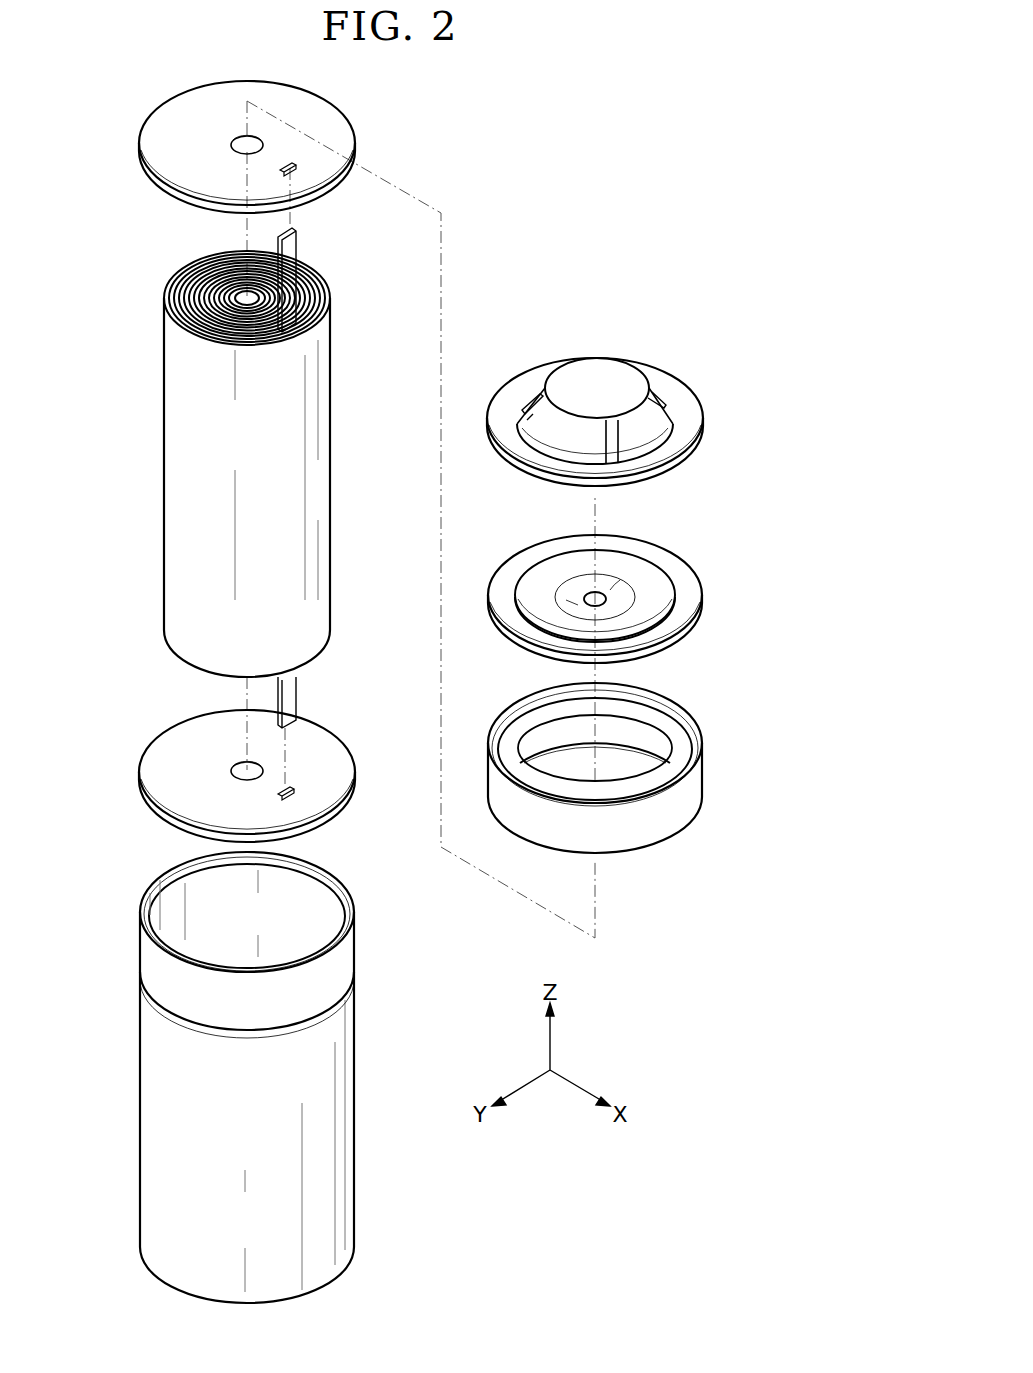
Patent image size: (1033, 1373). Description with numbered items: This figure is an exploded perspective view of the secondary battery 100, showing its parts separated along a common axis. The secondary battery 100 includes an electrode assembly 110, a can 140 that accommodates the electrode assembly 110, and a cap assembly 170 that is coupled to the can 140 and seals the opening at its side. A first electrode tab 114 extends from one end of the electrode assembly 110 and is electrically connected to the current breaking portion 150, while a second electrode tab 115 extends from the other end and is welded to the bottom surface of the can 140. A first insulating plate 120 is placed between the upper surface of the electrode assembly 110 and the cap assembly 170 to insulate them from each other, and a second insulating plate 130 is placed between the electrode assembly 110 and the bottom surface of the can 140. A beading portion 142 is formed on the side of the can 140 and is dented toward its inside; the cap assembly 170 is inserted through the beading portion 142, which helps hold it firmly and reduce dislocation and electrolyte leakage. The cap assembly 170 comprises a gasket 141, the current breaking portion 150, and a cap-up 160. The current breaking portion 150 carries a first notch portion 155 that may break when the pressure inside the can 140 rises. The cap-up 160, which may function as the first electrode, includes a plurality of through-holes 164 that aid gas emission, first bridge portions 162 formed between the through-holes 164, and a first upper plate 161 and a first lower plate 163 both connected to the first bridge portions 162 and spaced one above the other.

The secondary battery 100 is at (593, 140).
The electrode assembly 110 is at (165, 472).
The first electrode tab 114 is at (293, 250).
The second electrode tab 115 is at (295, 700).
The first insulating plate 120 is at (157, 132).
The second insulating plate 130 is at (150, 762).
The can 140 is at (148, 1132).
The gasket 141 is at (696, 790).
The beading portion 142 is at (148, 1000).
The current breaking portion 150 is at (693, 624).
The first notch portion 155 is at (632, 593).
The cap-up 160 is at (698, 452).
The first upper plate 161 is at (620, 364).
The first bridge portions 162 is at (532, 396).
The first lower plate 163 is at (668, 382).
The through-holes 164 is at (654, 413).
The cap assembly 170 is at (776, 478).